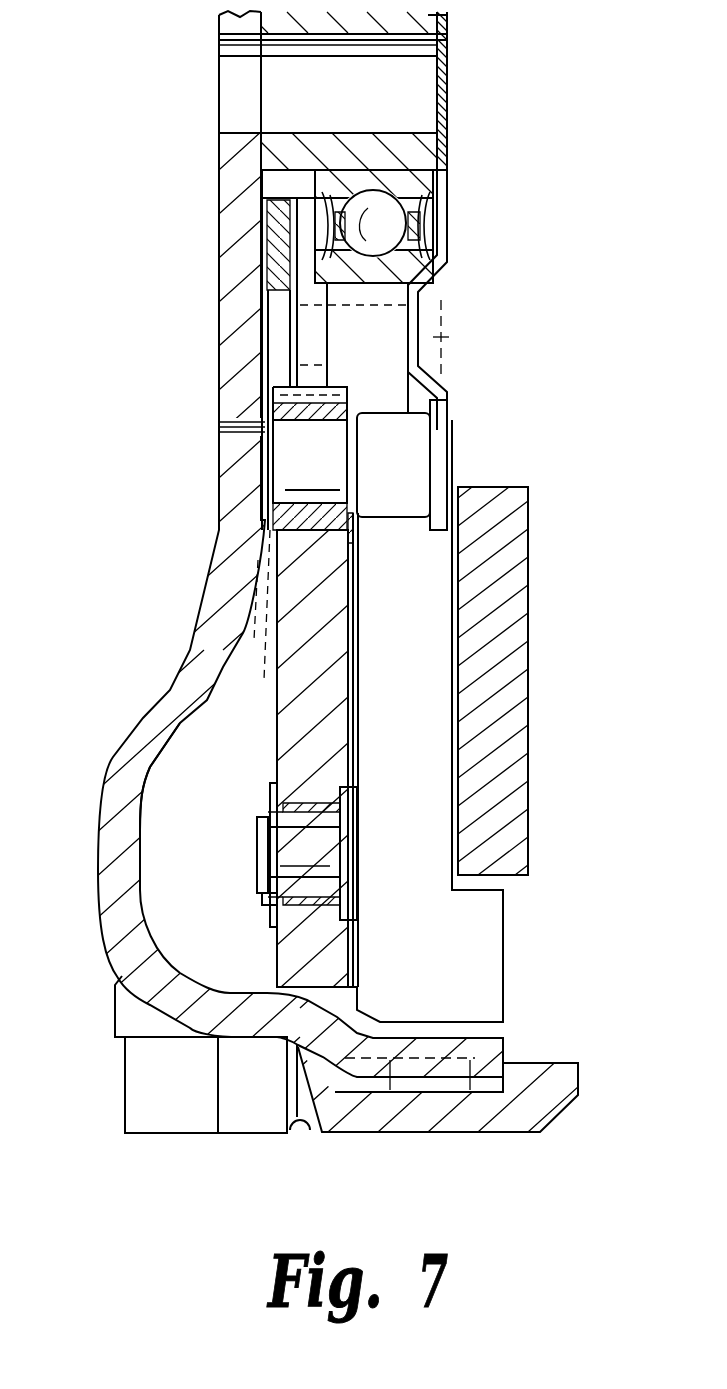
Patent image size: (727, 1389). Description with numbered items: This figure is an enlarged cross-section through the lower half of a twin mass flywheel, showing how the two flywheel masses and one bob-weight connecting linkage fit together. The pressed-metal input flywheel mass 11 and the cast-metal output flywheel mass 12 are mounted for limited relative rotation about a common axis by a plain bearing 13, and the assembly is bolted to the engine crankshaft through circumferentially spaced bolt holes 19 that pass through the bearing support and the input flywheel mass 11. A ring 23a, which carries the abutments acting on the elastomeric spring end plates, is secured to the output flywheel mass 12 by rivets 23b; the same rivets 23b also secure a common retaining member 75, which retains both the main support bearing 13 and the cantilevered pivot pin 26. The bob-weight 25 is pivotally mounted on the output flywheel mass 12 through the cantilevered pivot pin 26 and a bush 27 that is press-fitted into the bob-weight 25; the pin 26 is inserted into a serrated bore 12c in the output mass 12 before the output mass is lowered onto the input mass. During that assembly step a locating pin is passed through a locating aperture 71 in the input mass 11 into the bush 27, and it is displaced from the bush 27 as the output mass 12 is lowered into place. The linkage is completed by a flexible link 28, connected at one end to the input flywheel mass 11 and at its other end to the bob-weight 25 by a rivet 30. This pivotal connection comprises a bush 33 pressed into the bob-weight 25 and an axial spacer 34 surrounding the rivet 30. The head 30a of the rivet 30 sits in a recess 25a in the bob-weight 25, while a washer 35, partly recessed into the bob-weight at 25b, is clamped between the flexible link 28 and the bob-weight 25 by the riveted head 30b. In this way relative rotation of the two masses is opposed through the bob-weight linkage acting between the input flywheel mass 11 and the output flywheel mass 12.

The input flywheel mass 11 is at (237, 222).
The bolt holes 19 is at (397, 33).
The plain bearing 13 is at (412, 183).
The ring 23a is at (403, 273).
The rivets 23b is at (440, 336).
The common retaining member 75 is at (447, 388).
The bush 27 is at (270, 398).
The locating apertures 71 is at (252, 425).
The cantilevered pivot pin 26 is at (405, 455).
The bores 12c is at (403, 517).
The output flywheel mass 12 is at (480, 937).
The bob-weight 25 is at (305, 705).
The recess for washer 25b is at (278, 765).
The recess for rivet head 25a is at (360, 975).
The flexible link 28 is at (263, 812).
The bush 33 is at (300, 795).
The axial spacer 34 is at (330, 820).
The rivet 30 is at (322, 850).
The rivet head 30a is at (350, 884).
The riveted head 30b is at (262, 852).
The washer 35 is at (265, 910).